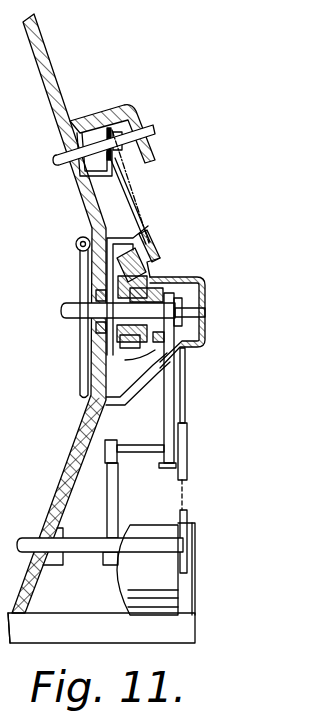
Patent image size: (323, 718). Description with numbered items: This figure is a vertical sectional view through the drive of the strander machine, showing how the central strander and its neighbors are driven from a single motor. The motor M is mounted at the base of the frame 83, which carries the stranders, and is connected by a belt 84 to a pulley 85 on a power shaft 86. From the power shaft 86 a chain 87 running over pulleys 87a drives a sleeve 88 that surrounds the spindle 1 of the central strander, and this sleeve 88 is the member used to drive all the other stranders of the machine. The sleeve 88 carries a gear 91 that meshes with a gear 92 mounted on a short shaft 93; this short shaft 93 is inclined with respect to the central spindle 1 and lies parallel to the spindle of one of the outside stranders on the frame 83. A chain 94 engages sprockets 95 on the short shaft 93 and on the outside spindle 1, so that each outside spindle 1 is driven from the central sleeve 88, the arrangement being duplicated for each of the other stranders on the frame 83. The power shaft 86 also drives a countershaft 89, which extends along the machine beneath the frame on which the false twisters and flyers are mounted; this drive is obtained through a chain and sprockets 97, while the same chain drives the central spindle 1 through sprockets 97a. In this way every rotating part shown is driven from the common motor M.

The spindle 1 is at (90, 145).
The frame 83 is at (62, 471).
The belt 84 is at (108, 478).
The pulley 85 is at (120, 446).
The power shaft 86 is at (134, 452).
The chain 87 is at (163, 402).
The pulleys 87a is at (125, 360).
The sleeve 88 is at (100, 286).
The countershaft 89 is at (82, 553).
The gear 91 is at (162, 268).
The gear 92 is at (128, 240).
The short shaft 93 is at (148, 236).
The chain 94 is at (135, 190).
The sprockets 95 is at (115, 110).
The sprockets 97 is at (182, 573).
The sprockets 97a is at (178, 300).